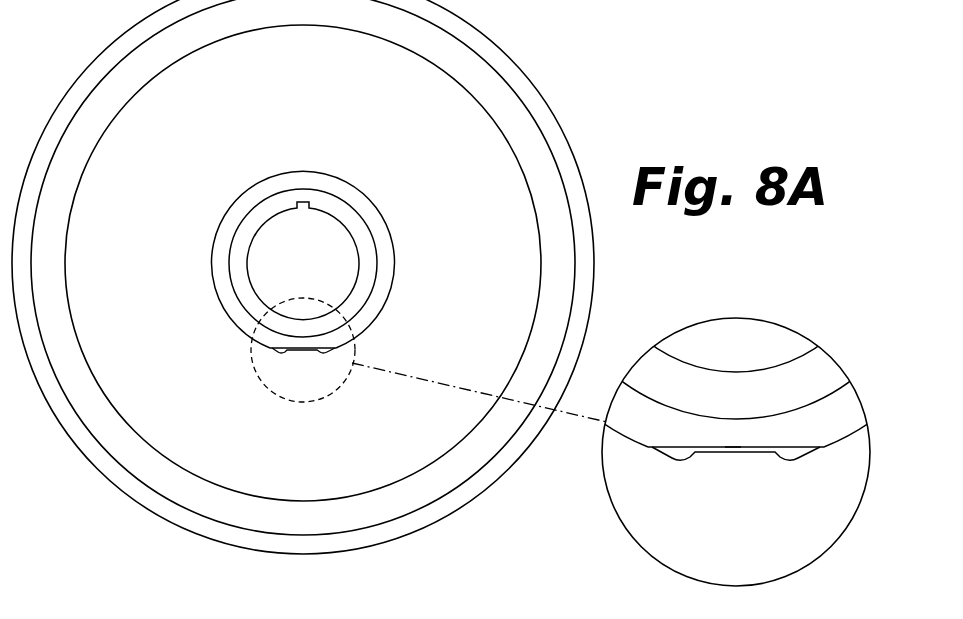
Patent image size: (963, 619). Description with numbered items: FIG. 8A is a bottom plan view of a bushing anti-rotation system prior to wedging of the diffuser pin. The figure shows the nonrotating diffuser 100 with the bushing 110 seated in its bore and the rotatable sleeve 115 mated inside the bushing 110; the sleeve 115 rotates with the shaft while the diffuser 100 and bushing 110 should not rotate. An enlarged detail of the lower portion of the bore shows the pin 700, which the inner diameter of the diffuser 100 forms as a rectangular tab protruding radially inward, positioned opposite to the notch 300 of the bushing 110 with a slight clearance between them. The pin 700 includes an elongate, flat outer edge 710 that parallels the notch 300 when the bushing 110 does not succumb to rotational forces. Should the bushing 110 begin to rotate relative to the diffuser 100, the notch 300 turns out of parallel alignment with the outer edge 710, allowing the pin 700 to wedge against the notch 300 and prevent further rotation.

The diffuser 100 is at (498, 63).
The bushing 110 is at (368, 213).
The sleeve 115 is at (265, 211).
The notch 300 is at (800, 447).
The pin 700 is at (757, 453).
The outer edge 710 is at (733, 447).